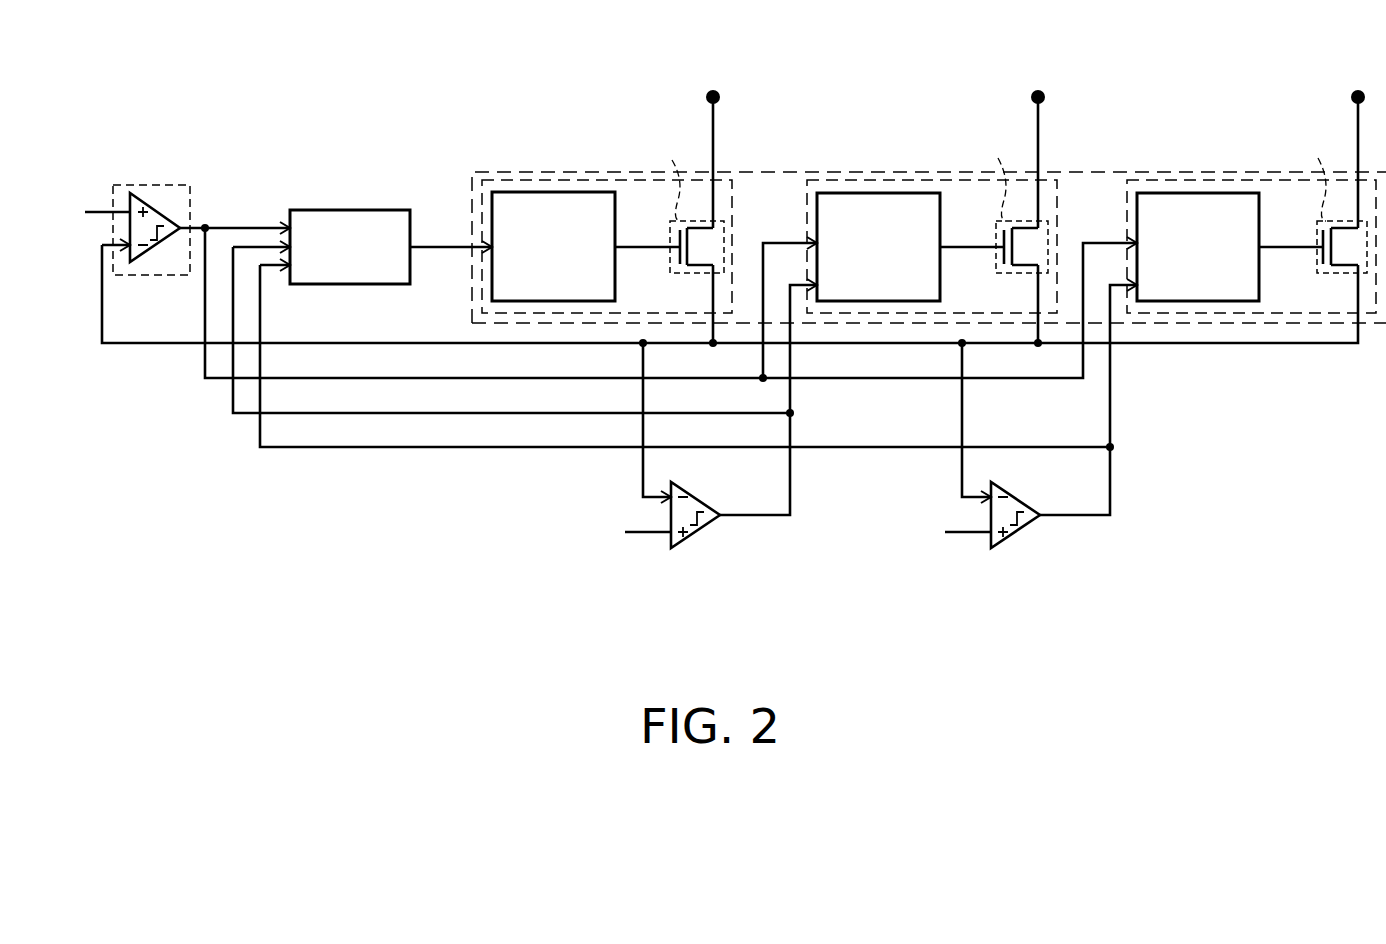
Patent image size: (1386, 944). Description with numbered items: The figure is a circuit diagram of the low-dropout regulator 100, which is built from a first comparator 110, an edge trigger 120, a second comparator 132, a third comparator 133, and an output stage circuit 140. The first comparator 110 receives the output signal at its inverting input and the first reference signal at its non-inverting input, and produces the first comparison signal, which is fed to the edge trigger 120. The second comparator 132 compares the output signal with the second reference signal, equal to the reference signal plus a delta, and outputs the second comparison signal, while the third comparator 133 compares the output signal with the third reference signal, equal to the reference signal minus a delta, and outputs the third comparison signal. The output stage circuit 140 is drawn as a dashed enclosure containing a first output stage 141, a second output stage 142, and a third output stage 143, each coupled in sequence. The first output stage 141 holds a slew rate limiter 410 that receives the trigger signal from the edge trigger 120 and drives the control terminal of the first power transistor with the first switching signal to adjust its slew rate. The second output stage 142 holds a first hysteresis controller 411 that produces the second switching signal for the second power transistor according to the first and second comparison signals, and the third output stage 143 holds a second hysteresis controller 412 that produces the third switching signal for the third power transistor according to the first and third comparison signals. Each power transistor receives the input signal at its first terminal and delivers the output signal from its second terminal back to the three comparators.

The low-dropout regulator 100 is at (702, 352).
The first comparator 110 is at (181, 184).
The edge trigger 120 is at (350, 210).
The second comparator 132 is at (698, 530).
The third comparator 133 is at (1018, 530).
The output stage circuit 140 is at (610, 172).
The first output stage 141 is at (528, 180).
The second output stage 142 is at (856, 180).
The third output stage 143 is at (1176, 180).
The slew rate limiter 410 is at (557, 192).
The first hysteresis controller 411 is at (880, 192).
The second hysteresis controller 412 is at (1200, 192).